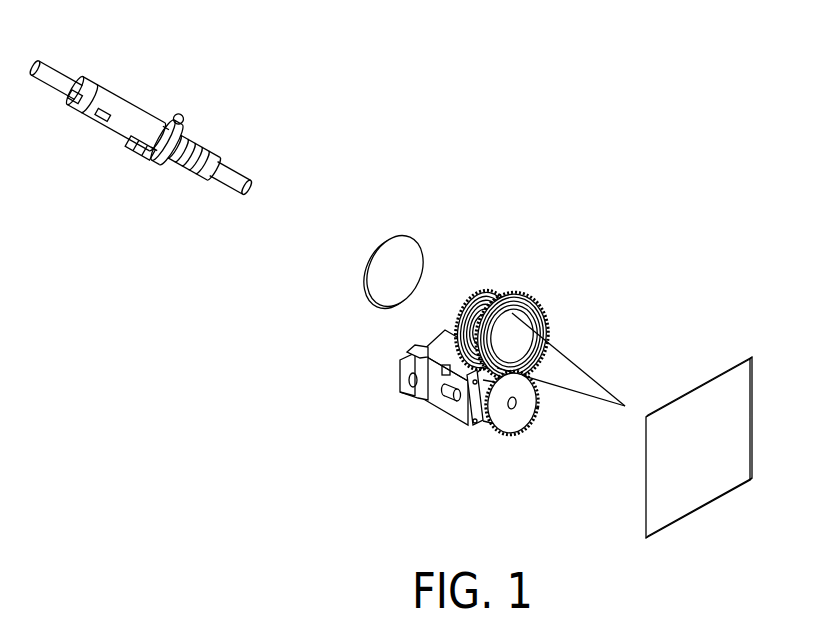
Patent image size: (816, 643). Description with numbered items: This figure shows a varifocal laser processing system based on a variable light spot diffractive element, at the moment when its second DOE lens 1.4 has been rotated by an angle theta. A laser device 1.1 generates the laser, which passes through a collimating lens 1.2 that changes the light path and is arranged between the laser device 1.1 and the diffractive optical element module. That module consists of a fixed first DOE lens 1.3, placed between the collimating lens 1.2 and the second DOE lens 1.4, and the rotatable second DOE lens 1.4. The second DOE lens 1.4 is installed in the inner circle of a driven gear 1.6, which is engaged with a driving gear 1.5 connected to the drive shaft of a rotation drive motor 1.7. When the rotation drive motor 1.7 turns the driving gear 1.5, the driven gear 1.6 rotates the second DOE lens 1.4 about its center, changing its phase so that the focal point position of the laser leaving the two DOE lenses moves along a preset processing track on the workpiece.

The laser device 1.1 is at (200, 157).
The collimating lens 1.2 is at (397, 255).
The first DOE lens 1.3 is at (492, 280).
The second DOE lens 1.4 is at (544, 294).
The driving gear 1.5 is at (495, 413).
The driven gear 1.6 is at (355, 384).
The rotation drive motor 1.7 is at (307, 346).